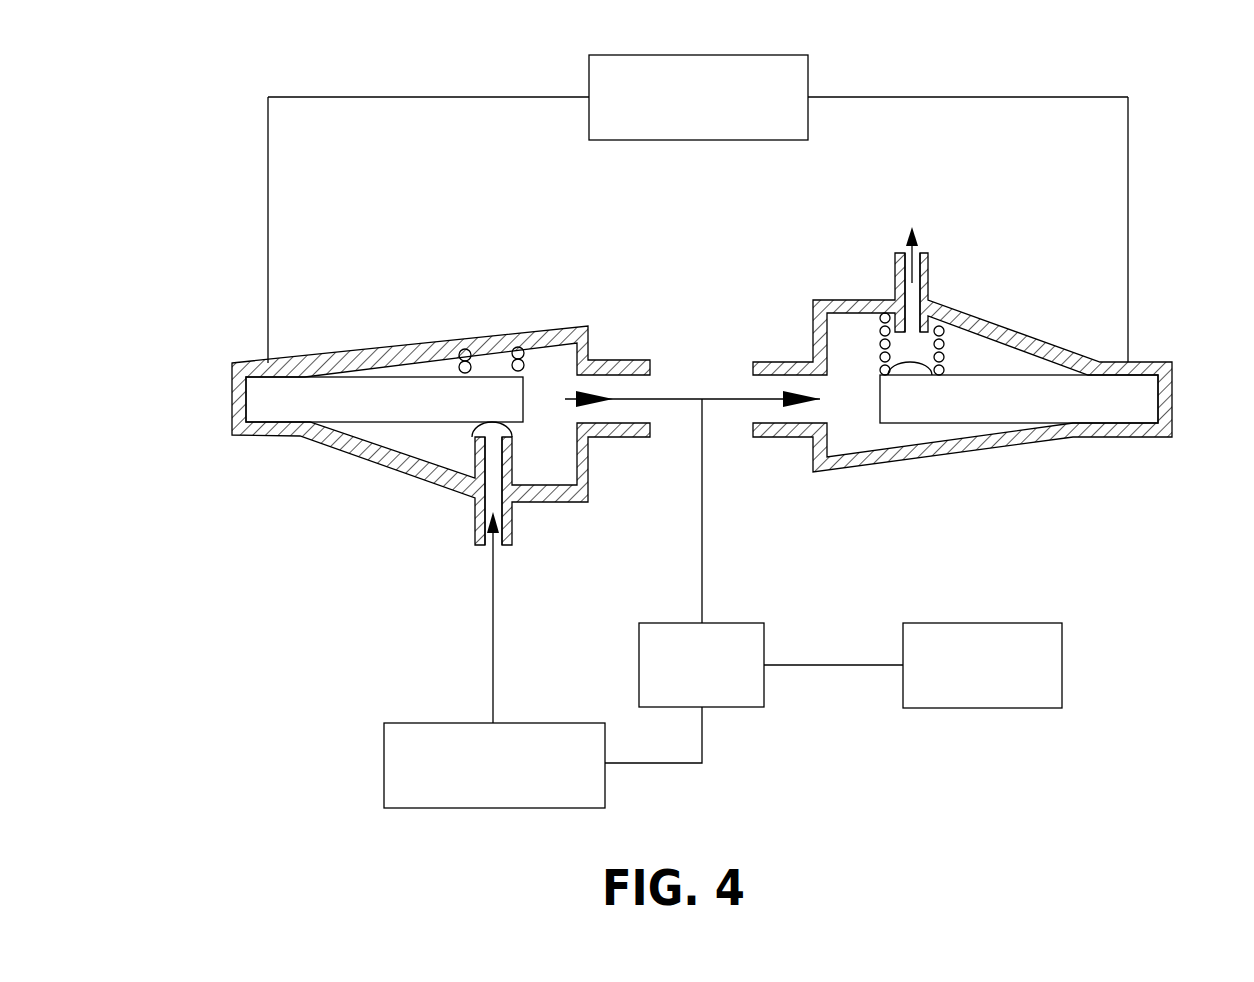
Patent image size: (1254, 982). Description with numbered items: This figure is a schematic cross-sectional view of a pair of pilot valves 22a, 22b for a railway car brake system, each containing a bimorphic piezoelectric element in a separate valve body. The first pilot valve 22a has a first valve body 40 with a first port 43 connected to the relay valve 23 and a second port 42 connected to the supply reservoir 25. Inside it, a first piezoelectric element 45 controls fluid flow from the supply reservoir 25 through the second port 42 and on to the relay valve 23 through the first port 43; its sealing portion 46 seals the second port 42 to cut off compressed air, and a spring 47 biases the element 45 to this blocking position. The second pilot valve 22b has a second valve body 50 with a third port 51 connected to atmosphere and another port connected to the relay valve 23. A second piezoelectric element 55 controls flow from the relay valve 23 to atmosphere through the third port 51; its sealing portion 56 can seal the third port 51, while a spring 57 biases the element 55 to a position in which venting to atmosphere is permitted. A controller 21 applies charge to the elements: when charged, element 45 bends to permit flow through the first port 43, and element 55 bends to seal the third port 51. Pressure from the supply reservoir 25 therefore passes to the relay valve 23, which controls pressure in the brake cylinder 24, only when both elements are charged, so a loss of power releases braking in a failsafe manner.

The controller 21 is at (808, 69).
The pilot valve 22a is at (497, 212).
The pilot valve 22b is at (858, 212).
The relay valve 23 is at (766, 633).
The brake cylinder 24 is at (1063, 645).
The supply reservoir 25 is at (384, 757).
The first valve body 40 is at (596, 497).
The second port 42 is at (511, 527).
The first port 43 is at (616, 438).
The first piezoelectric element 45 is at (274, 403).
The sealing portion 46 is at (474, 432).
The spring 47 is at (455, 362).
The second valve body 50 is at (818, 474).
The third port 51 is at (930, 268).
The second piezoelectric element 55 is at (1145, 393).
The sealing portion 56 is at (923, 372).
The spring 57 is at (784, 360).